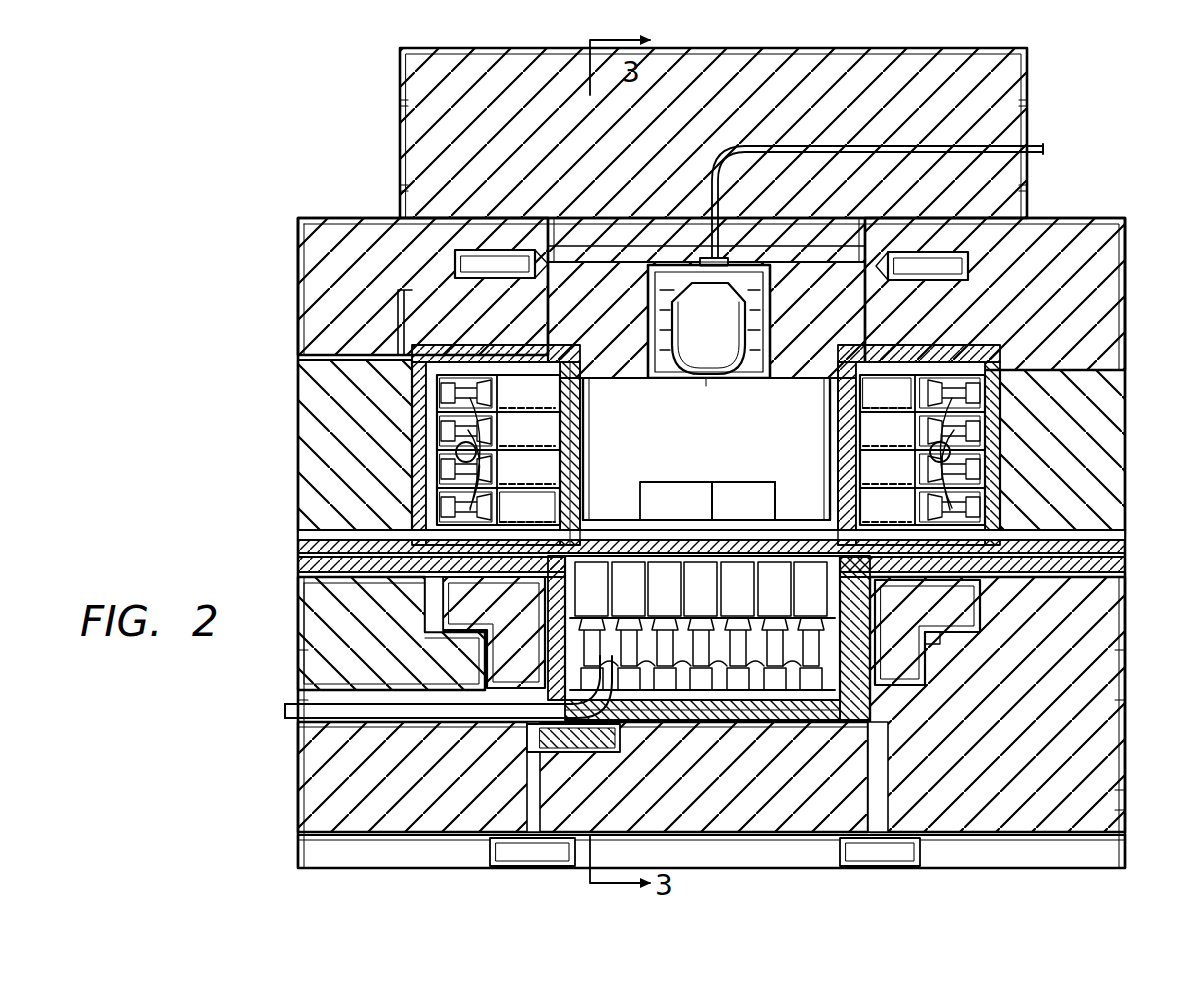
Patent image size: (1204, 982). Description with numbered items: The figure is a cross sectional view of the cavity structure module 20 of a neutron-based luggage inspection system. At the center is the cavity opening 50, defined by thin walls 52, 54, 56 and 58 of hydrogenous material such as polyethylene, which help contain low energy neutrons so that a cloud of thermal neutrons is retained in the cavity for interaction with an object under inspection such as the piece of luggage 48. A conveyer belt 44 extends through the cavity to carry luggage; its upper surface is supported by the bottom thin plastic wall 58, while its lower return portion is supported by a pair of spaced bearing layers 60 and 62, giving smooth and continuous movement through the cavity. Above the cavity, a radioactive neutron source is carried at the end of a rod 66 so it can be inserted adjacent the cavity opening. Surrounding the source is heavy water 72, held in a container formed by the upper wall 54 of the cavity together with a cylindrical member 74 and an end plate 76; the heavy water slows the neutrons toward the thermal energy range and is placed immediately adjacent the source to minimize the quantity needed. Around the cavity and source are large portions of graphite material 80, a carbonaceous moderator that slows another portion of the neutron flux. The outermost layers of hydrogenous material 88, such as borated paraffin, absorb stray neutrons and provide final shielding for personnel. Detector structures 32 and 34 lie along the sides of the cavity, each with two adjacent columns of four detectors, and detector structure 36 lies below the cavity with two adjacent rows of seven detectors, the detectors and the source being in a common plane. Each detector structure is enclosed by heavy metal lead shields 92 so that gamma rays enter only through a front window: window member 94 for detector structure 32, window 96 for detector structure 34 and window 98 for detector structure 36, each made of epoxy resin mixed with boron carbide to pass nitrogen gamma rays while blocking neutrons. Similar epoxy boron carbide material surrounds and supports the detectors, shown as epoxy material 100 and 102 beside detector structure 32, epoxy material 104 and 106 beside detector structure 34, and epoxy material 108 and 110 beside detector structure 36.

The cavity structure module 20 is at (1082, 170).
The detector structure 32 is at (586, 432).
The detector structure 34 is at (824, 428).
The detector structure 36 is at (747, 540).
The conveyer belt 44 is at (676, 501).
The luggage 48 is at (756, 482).
The cavity opening 50 is at (706, 449).
The thin wall 52 is at (586, 476).
The upper wall 54 is at (706, 390).
The thin wall 56 is at (828, 403).
The bottom thin plastic wall 58 is at (790, 530).
The bearing layer 60 is at (606, 530).
The bearing layer 62 is at (640, 540).
The rod 66 is at (872, 150).
The heavy water 72 is at (650, 292).
The cylindrical member 74 is at (666, 315).
The end plate 76 is at (700, 262).
The graphite material 80 is at (530, 282).
The layers of hydrogenous material 88 is at (430, 132).
The lead shields 92 is at (948, 360).
The window member 94 is at (580, 454).
The window 96 is at (840, 460).
The window 98 is at (705, 520).
The epoxy material 100 is at (586, 396).
The epoxy material 102 is at (527, 505).
The epoxy material 104 is at (887, 393).
The epoxy material 106 is at (982, 584).
The epoxy material 108 is at (545, 650).
The epoxy material 110 is at (866, 656).